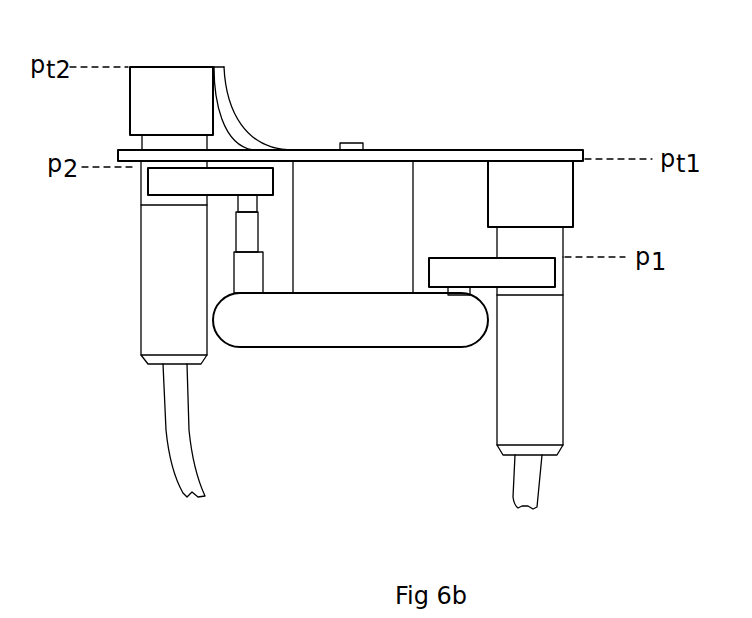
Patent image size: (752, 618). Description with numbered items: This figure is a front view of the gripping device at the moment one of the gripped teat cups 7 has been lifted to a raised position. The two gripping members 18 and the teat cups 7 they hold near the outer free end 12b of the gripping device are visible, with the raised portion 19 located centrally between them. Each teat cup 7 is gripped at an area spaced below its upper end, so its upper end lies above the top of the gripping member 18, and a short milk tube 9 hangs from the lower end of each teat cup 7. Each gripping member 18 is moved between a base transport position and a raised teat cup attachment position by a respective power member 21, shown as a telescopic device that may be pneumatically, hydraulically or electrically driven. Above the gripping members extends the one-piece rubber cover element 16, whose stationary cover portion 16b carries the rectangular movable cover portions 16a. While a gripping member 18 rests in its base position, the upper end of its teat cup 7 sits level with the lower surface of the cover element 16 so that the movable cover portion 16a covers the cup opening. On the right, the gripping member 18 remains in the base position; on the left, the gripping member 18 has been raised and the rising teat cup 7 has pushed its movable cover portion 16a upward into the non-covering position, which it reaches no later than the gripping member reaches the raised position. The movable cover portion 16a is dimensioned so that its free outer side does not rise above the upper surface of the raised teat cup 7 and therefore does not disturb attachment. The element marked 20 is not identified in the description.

The cover element 16 is at (487, 157).
The movable cover portion 16a is at (230, 112).
The stationary cover portion 16b is at (138, 155).
The gripping member 18 is at (173, 182).
The raised portion 19 is at (363, 238).
The stop 20 is at (355, 142).
The power member 21 is at (248, 273).
The teat cup 7 is at (162, 278).
The short milk tube 9 is at (178, 412).
The outer free end 12b is at (350, 333).